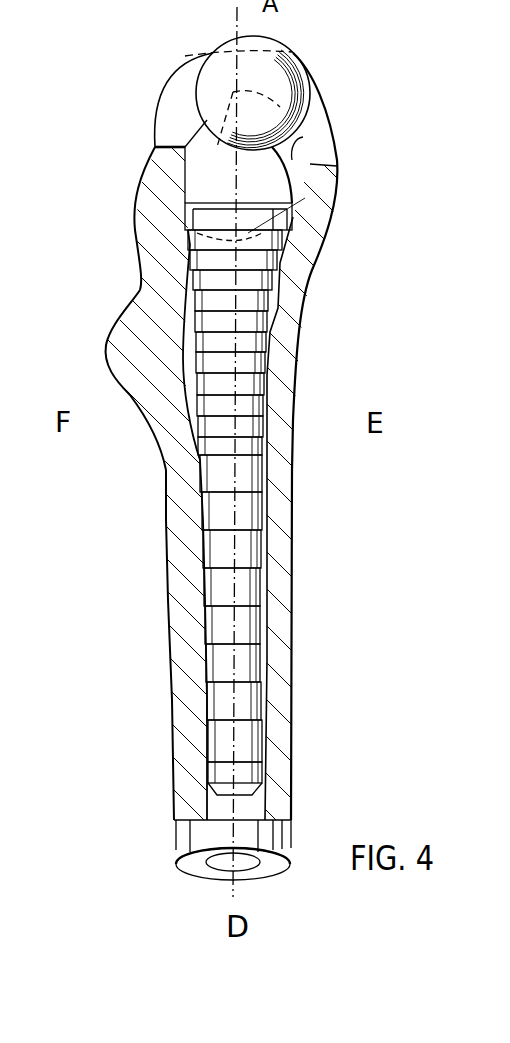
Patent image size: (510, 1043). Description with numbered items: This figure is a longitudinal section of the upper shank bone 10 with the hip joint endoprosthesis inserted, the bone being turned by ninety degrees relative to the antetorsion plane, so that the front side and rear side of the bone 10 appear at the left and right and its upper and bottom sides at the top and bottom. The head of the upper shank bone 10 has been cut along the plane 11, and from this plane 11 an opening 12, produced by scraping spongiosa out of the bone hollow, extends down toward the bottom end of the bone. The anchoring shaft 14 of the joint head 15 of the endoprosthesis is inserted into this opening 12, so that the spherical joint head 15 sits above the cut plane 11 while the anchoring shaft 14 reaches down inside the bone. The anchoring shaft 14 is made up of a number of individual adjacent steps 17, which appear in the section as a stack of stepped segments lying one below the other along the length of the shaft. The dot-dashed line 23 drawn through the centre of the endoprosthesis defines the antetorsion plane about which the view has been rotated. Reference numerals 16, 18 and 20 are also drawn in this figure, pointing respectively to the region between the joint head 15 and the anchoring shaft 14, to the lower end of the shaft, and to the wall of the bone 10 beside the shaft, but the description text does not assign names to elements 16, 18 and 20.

The upper shank bone 10 is at (262, 423).
The plane 11 is at (322, 148).
The opening 12 is at (295, 140).
The anchoring shaft 14 is at (195, 435).
The joint head 15 is at (282, 80).
The neck 16 is at (218, 180).
The steps 17 is at (253, 343).
The distal tip of stem 18 is at (228, 795).
The bone cortex 20 is at (279, 730).
The line 23 is at (237, 17).